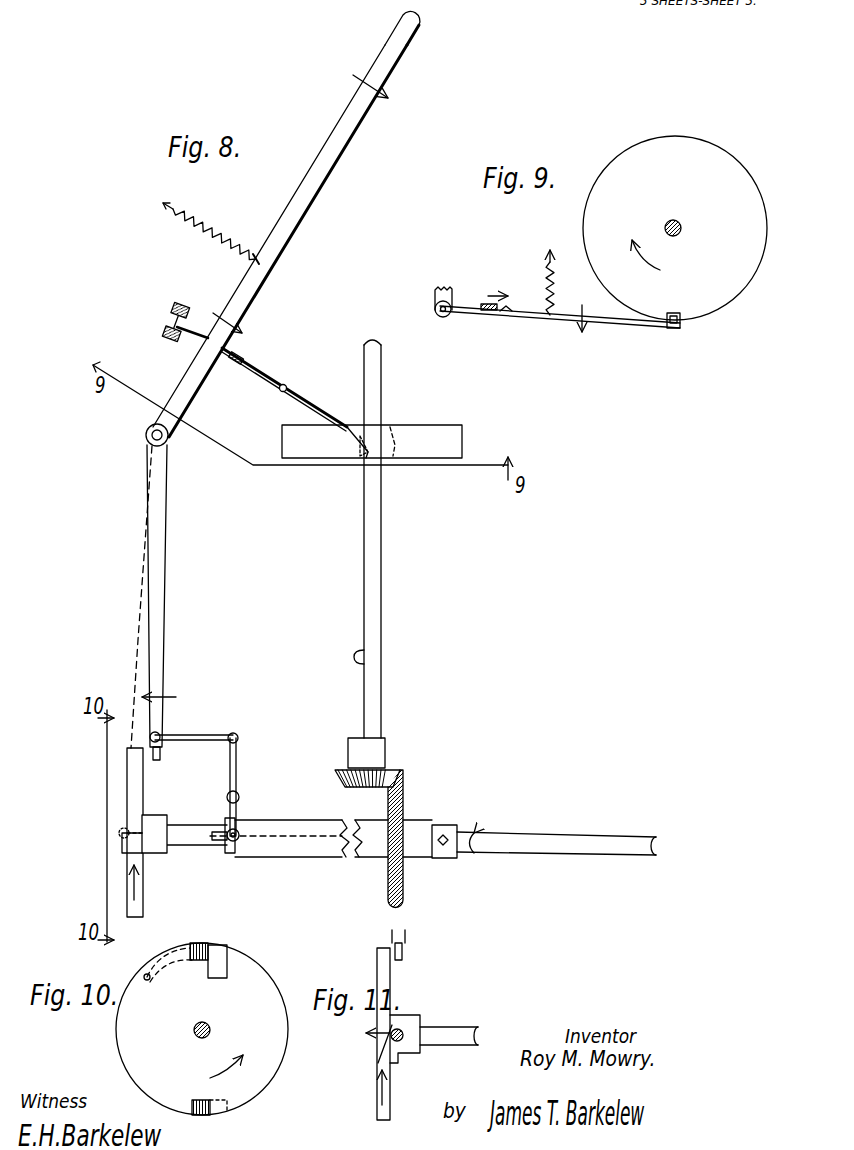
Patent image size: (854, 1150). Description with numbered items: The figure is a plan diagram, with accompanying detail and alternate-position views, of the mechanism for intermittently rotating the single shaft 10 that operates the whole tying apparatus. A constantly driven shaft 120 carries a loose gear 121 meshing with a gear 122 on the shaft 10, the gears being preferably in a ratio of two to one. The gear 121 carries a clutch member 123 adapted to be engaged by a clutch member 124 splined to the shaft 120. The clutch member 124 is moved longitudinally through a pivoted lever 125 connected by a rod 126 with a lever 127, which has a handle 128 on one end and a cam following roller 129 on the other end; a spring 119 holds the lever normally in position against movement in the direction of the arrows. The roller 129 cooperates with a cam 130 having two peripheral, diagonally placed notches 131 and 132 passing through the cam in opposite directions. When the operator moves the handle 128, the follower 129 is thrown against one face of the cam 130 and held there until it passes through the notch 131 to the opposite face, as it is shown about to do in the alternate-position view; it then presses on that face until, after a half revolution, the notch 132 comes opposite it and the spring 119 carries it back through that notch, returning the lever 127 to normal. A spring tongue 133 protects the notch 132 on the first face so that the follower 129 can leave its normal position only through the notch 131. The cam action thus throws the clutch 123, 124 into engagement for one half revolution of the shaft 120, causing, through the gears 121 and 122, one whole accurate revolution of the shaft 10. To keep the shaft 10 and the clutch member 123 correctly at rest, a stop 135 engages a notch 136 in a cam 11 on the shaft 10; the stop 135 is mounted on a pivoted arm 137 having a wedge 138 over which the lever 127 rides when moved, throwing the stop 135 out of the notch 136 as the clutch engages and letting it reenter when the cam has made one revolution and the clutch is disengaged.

In FIG. 8, the shaft 10 is at (381, 583).
In FIG. 9, the shaft 10 is at (683, 230).
In FIG. 8, the cam 11 is at (415, 452).
In FIG. 9, the cam 11 is at (675, 228).
In FIG. 8, the spring 119 is at (219, 229).
In FIG. 8, the constantly driven shaft 120 is at (570, 847).
In FIG. 8, the loose gear 121 is at (403, 878).
In FIG. 8, the gear 122 is at (390, 770).
In FIG. 8, the clutch member 123 is at (370, 847).
In FIG. 8, the clutch member 124 is at (310, 848).
In FIG. 8, the pivoted lever 125 is at (238, 777).
In FIG. 8, the rod 126 is at (192, 737).
In FIG. 8, the lever 127 is at (282, 232).
In FIG. 9, the lever 127 is at (491, 303).
In FIG. 8, the handle 128 is at (394, 48).
In FIG. 8, the cam following roller 129 is at (161, 755).
In FIG. 11, the cam following roller 129 is at (405, 952).
In FIG. 8, the cam 130 is at (120, 878).
In FIG. 10, the cam 130 is at (202, 1029).
In FIG. 11, the cam 130 is at (370, 1080).
In FIG. 11, the notch 131 is at (390, 1027).
In FIG. 8, the notch 132 is at (130, 835).
In FIG. 8, the spring tongue 133 is at (128, 833).
In FIG. 10, the spring tongue 133 is at (183, 948).
In FIG. 8, the stop 135 is at (367, 458).
In FIG. 9, the stop 135 is at (672, 328).
In FIG. 8, the notch 136 is at (395, 425).
In FIG. 9, the notch 136 is at (683, 321).
In FIG. 8, the pivoted arm 137 is at (275, 372).
In FIG. 9, the pivoted arm 137 is at (540, 320).
In FIG. 8, the wedge 138 is at (240, 355).
In FIG. 9, the wedge 138 is at (510, 315).